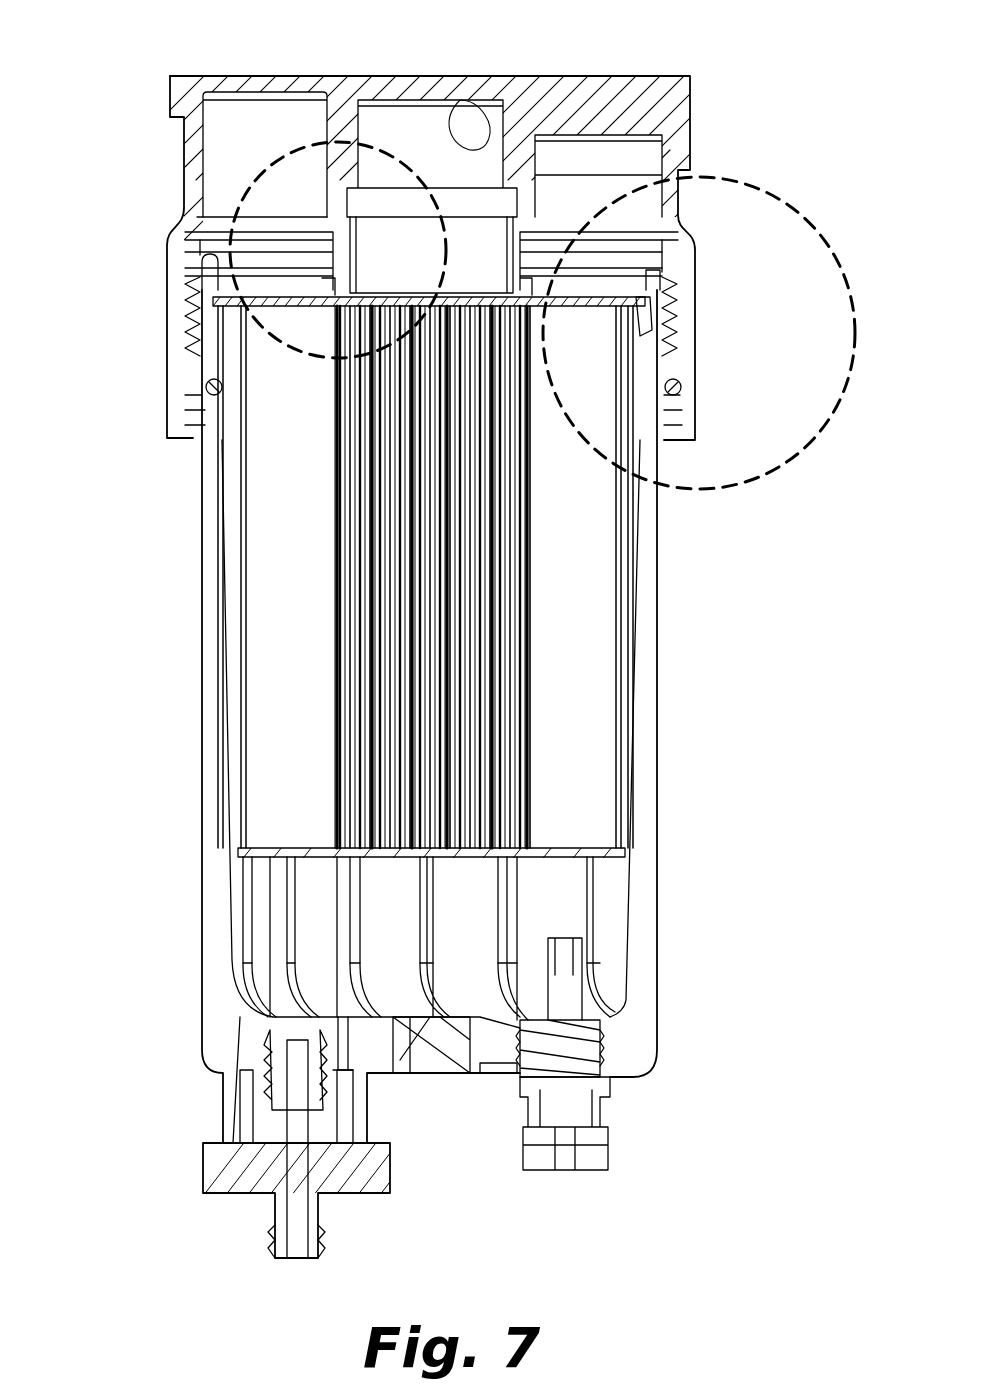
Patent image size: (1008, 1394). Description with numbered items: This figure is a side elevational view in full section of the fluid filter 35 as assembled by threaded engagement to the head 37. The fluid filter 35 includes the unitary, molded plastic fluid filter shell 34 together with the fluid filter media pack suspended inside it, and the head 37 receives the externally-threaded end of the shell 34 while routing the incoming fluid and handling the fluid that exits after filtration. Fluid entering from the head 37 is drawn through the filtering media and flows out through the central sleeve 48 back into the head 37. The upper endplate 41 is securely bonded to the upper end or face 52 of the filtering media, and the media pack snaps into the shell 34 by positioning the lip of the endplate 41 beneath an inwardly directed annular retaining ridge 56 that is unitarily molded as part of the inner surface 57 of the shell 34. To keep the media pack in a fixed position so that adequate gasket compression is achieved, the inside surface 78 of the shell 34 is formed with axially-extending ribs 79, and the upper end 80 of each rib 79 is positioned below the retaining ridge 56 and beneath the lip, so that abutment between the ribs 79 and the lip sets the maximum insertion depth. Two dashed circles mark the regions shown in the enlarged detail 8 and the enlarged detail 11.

The enlarged detail of FIG. 8 is at (822, 235).
The detail of FIG. 11 is at (240, 215).
The fluid filter shell 34 is at (214, 732).
The fluid filter 35 is at (168, 703).
The head 37 is at (613, 102).
The upper endplate 41 is at (196, 332).
The sleeve 48 is at (497, 248).
The upper end or face of filtering media 52 is at (285, 306).
The retaining ridge 56 is at (643, 297).
The inner surface of fluid filter shell 57 is at (200, 258).
The inside surface of fluid filter shell 78 is at (630, 636).
The axially-extending rib 79 is at (636, 388).
The upper end of rib 80 is at (645, 328).